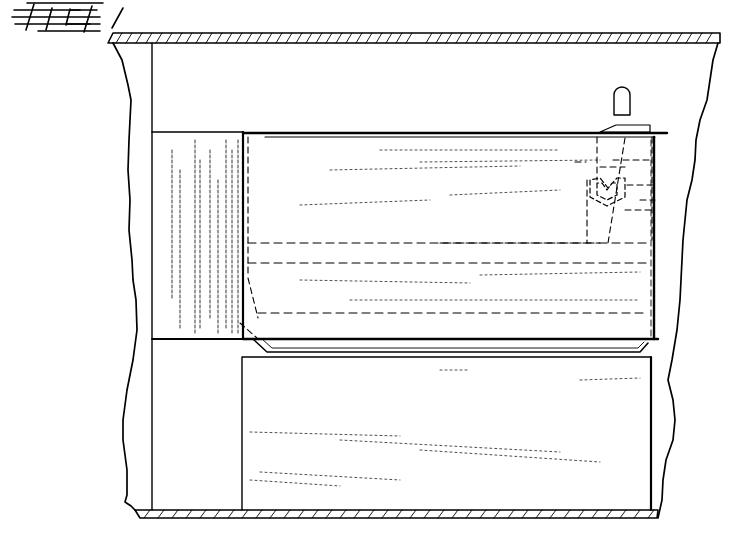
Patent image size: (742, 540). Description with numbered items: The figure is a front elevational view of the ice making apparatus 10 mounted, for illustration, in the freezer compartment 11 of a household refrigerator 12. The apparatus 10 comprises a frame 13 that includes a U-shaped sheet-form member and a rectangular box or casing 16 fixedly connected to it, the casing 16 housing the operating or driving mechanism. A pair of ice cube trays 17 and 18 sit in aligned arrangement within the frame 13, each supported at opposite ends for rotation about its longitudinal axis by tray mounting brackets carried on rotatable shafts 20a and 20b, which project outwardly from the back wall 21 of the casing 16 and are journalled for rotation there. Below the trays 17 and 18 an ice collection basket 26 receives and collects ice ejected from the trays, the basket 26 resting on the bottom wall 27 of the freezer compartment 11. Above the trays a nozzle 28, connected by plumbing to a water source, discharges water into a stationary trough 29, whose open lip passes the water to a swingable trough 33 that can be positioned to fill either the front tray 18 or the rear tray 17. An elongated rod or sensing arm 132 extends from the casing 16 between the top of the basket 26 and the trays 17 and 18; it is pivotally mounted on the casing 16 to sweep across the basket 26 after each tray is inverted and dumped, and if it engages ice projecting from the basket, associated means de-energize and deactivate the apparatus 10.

The ice making apparatus 10 is at (673, 181).
The freezer compartment 11 is at (418, 54).
The household refrigerator 12 is at (258, 37).
The frame 13 is at (656, 312).
The box or casing 16 is at (196, 150).
The ice cube tray 17 is at (492, 316).
The ice cube tray 18 is at (458, 243).
The rotatable shaft 20a is at (250, 252).
The rotatable shaft 20b is at (266, 283).
The back wall 21 is at (246, 176).
The ice collection basket 26 is at (638, 432).
The bottom wall 27 is at (170, 510).
The nozzle 28 is at (624, 95).
The stationary trough 29 is at (612, 131).
The swingable trough 33 is at (655, 205).
The sensing arm 132 is at (378, 352).